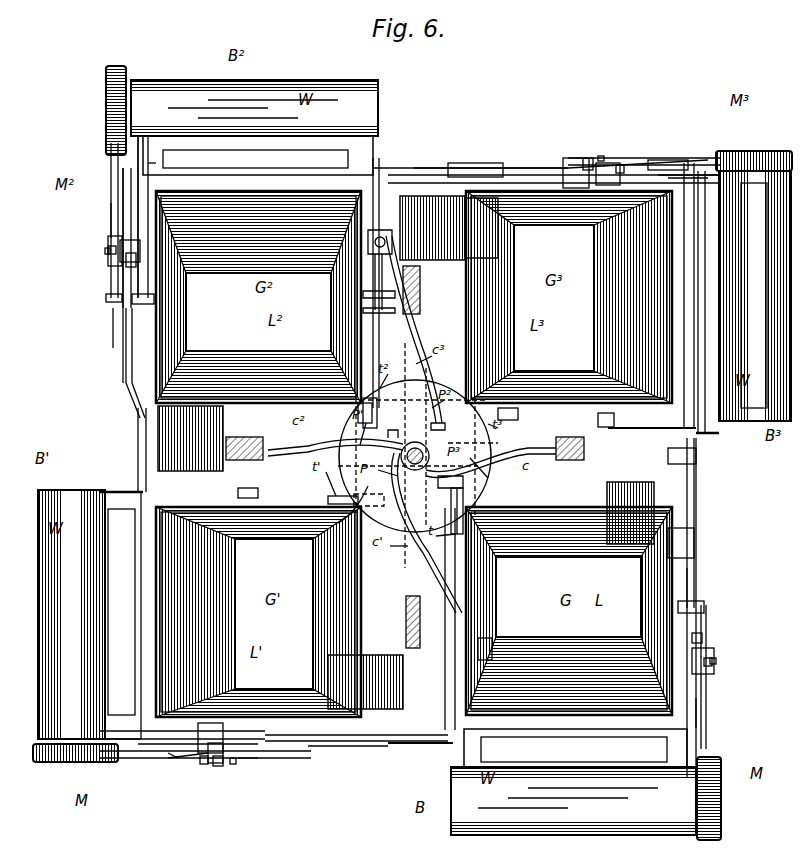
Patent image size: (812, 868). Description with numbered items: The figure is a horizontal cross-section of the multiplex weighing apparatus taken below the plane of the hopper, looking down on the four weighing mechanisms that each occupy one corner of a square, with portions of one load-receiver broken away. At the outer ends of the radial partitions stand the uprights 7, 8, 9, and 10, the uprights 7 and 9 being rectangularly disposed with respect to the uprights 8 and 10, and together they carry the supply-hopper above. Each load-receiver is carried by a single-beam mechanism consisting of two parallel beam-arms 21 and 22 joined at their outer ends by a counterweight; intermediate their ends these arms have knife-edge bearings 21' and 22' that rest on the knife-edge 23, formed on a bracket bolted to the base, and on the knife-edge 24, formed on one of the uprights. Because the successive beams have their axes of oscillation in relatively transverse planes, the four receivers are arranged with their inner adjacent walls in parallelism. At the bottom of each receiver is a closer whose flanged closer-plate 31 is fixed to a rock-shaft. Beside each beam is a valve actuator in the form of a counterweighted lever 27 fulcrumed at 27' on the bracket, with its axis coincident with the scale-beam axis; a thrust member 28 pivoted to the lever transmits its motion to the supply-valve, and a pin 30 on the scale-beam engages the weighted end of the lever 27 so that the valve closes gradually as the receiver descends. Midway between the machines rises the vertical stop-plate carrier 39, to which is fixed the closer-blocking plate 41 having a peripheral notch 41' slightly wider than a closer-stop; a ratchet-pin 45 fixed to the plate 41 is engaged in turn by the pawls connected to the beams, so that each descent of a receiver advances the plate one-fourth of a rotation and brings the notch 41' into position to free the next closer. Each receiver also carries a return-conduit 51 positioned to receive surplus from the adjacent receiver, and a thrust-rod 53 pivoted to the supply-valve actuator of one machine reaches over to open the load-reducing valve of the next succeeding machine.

The upright 7 is at (396, 622).
The upright 8 is at (249, 436).
The upright 9 is at (421, 290).
The upright 10 is at (570, 456).
The beam-arm 21 is at (408, 452).
The knife-edge bearing 21' is at (402, 466).
The beam-arm 22 is at (406, 453).
The knife-edge bearing 22' is at (425, 487).
The knife-edge 23 is at (397, 469).
The knife-edge 24 is at (379, 256).
The counterweighted lever 27 is at (393, 456).
The fulcrum 27' is at (405, 459).
The thrust member 28 is at (391, 463).
The pin 30 is at (411, 453).
The closer-plate 31 is at (413, 455).
The stop-plate carrier 39 is at (415, 456).
The closer-blocking plate 41 is at (376, 411).
The notch 41' is at (485, 506).
The ratchet-pin 45 is at (412, 436).
The return-conduit 51 is at (413, 449).
The thrust-rod 53 is at (108, 512).